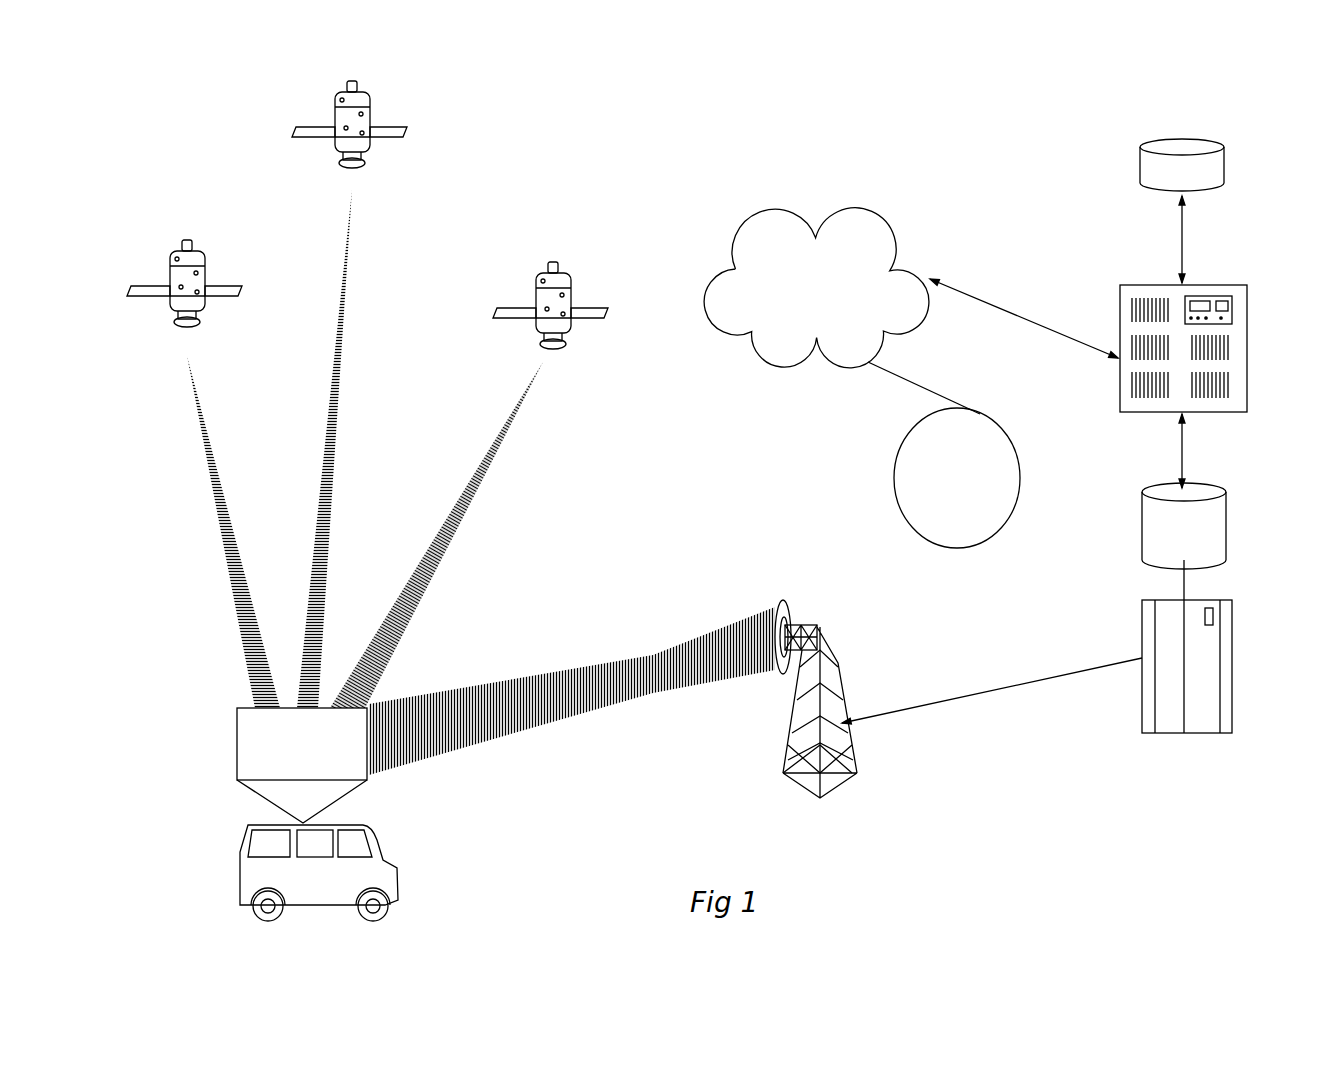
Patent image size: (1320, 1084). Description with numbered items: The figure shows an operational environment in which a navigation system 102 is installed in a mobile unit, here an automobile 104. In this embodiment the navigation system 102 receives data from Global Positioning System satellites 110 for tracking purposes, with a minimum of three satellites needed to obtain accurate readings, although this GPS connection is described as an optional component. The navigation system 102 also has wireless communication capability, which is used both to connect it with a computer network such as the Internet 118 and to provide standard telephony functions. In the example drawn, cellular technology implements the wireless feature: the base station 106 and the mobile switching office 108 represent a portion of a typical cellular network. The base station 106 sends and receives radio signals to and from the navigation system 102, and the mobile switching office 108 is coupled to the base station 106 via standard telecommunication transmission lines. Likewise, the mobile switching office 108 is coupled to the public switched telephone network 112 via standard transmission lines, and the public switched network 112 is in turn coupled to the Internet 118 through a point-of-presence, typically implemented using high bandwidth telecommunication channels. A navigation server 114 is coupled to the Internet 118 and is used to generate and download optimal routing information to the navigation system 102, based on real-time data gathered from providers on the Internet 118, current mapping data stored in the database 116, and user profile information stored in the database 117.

The navigation system 102 is at (237, 743).
The automobile 104 is at (397, 863).
The base station 106 is at (826, 638).
The mobile switching office 108 is at (1232, 630).
The Global Positioning System satellites 110 is at (405, 127).
The public switched telephone network 112 is at (1005, 518).
The navigation server 114 is at (1225, 283).
The database 116 is at (1204, 137).
The database 117 is at (1228, 536).
The Internet 118 is at (889, 233).